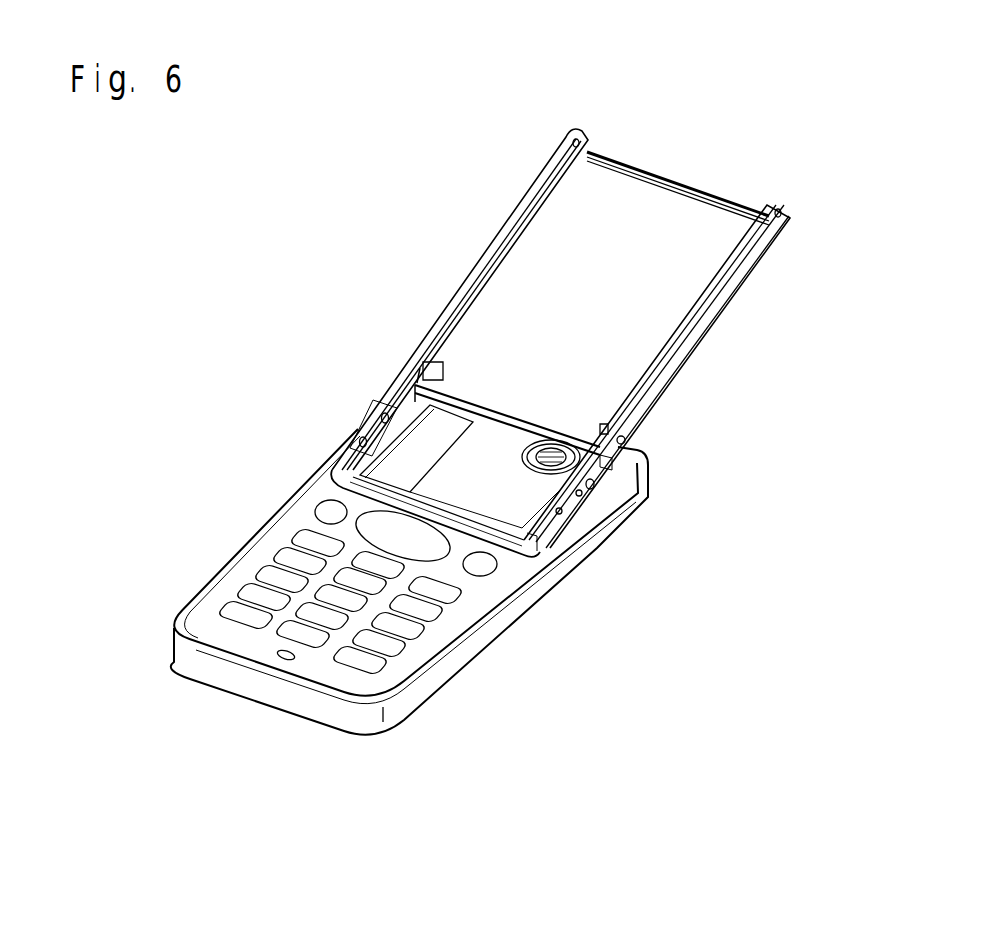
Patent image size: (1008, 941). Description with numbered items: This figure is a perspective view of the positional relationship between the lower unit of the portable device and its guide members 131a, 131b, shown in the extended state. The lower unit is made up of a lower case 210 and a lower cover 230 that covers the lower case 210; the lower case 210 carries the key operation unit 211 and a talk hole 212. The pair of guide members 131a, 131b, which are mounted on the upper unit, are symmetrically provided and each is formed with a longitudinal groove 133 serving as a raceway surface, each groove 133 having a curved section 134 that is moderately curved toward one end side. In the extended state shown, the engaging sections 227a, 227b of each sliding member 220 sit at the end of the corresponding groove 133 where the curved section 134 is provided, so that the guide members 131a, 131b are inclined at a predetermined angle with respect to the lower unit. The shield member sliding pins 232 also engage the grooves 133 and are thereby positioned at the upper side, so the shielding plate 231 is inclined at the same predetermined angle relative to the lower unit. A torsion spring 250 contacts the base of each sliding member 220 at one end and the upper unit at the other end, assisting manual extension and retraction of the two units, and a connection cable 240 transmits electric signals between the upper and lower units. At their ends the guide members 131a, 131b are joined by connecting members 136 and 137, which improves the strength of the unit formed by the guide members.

The guide member 131a is at (577, 128).
The guide member 131b is at (788, 208).
The groove 133 is at (768, 262).
The connecting member 136 is at (706, 186).
The connecting member 137 is at (446, 524).
The lower case 210 is at (325, 682).
The key operation unit 211 is at (238, 614).
The talk hole 212 is at (286, 660).
The sliding member 220 is at (366, 430).
The engaging section 227a is at (561, 514).
The engaging section 227b is at (584, 494).
The lower cover 230 is at (483, 652).
The shielding plate 231 is at (504, 402).
The shield member sliding pin 232 is at (635, 438).
The connection cable 240 is at (388, 464).
The torsion spring 250 is at (560, 440).
The curved section 134 is at (600, 485).